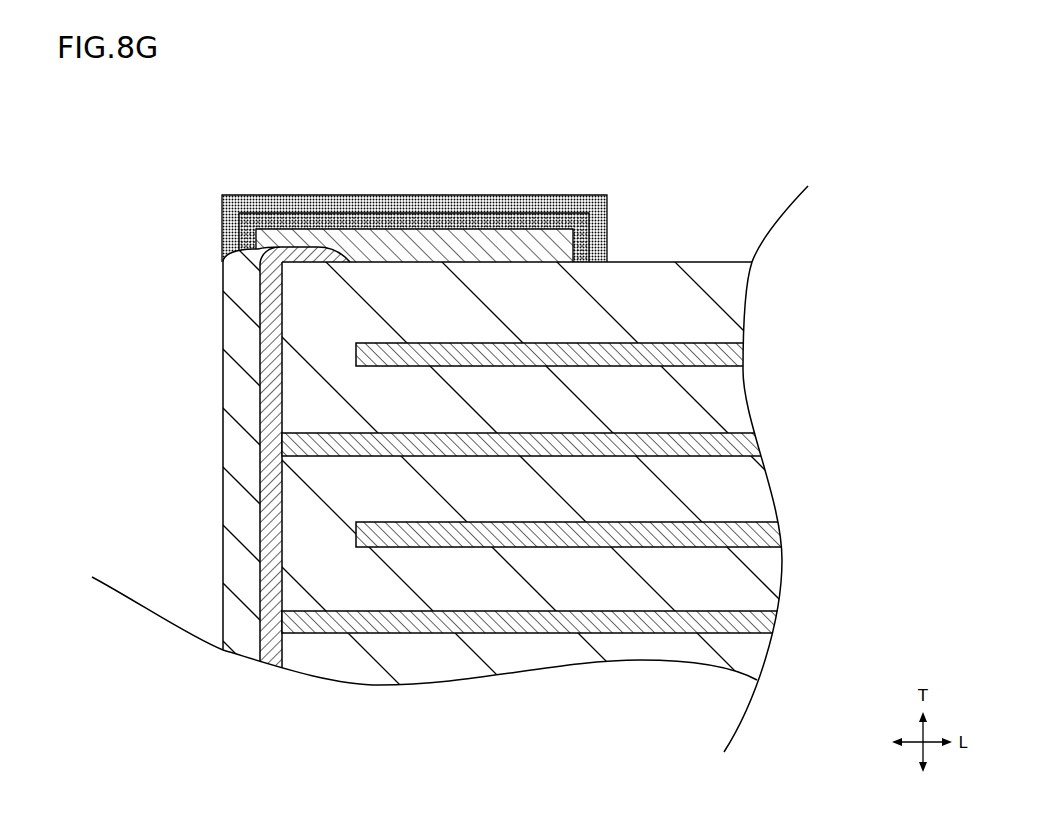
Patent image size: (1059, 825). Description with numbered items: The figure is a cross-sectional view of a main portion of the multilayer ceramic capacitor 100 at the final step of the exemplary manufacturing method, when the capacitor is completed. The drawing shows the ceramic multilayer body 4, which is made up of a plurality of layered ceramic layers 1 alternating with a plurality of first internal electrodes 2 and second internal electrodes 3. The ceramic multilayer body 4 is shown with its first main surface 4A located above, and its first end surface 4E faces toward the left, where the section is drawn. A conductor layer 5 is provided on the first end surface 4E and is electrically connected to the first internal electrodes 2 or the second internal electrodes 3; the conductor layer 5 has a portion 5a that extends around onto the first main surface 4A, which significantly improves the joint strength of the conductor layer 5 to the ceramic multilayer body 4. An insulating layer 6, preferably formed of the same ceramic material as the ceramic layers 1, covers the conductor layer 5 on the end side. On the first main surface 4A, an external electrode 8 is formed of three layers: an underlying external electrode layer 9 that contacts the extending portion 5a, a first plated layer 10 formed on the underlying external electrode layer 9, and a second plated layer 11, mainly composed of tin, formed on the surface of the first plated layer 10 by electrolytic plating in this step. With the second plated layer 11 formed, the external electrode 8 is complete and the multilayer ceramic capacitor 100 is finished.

The multilayer ceramic capacitor 100 is at (172, 122).
The ceramic layer 1 is at (725, 403).
The first internal electrode 2 is at (748, 445).
The second internal electrode 3 is at (743, 353).
The ceramic multilayer body 4 is at (695, 305).
The first main surface 4A is at (643, 250).
The first end surface 4E is at (272, 487).
The conductor layer 5 is at (226, 415).
The portion 5a is at (313, 250).
The insulating layer 6 is at (247, 393).
The external electrode 8 is at (414, 169).
The underlying external electrode layer 9 is at (393, 242).
The first plated layer 10 is at (440, 220).
The second plated layer 11 is at (492, 197).